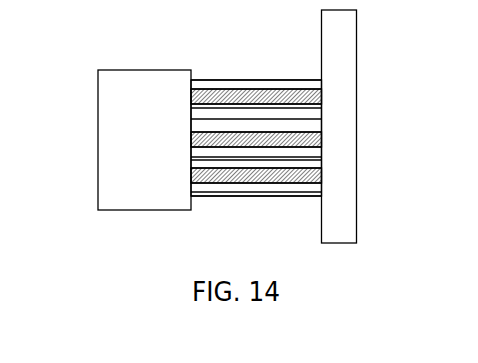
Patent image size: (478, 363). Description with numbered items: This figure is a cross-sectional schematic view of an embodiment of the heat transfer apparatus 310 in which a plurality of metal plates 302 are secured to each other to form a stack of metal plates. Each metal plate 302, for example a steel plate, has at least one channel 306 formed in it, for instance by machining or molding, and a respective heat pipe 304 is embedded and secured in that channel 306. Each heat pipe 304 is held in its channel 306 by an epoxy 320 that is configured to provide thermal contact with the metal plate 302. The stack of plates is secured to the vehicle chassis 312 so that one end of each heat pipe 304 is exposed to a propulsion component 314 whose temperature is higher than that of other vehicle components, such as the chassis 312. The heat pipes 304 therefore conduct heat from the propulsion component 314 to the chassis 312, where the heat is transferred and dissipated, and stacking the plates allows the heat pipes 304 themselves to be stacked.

The heat transfer apparatus 310 is at (41, 118).
The vehicle chassis 312 is at (357, 48).
The propulsion component 314 is at (113, 70).
The metal plate 302 is at (208, 85).
The heat pipe 304 is at (230, 140).
The channel 306 is at (263, 132).
The epoxy 320 is at (241, 86).